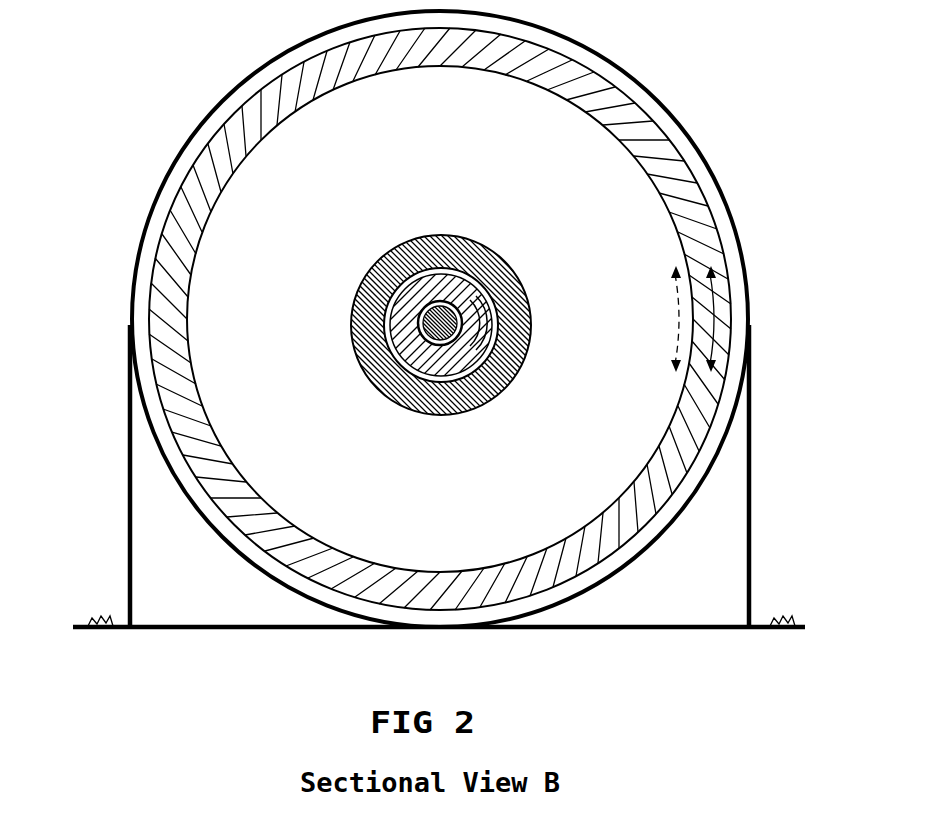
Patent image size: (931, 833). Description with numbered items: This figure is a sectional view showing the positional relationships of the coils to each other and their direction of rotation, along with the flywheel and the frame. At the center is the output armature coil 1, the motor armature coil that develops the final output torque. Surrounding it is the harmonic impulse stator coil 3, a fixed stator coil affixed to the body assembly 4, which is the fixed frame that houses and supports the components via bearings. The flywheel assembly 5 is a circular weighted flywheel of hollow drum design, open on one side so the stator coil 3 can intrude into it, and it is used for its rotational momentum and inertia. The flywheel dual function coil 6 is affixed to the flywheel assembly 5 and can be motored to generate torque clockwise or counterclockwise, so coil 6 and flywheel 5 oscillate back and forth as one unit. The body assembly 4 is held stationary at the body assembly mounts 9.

The output armature coil 1 is at (414, 333).
The harmonic impulse stator coil 3 is at (386, 258).
The body assembly 4 is at (164, 164).
The flywheel assembly 5 is at (652, 218).
The flywheel dual function coil 6 is at (473, 272).
The body assembly mount 9 is at (78, 620).